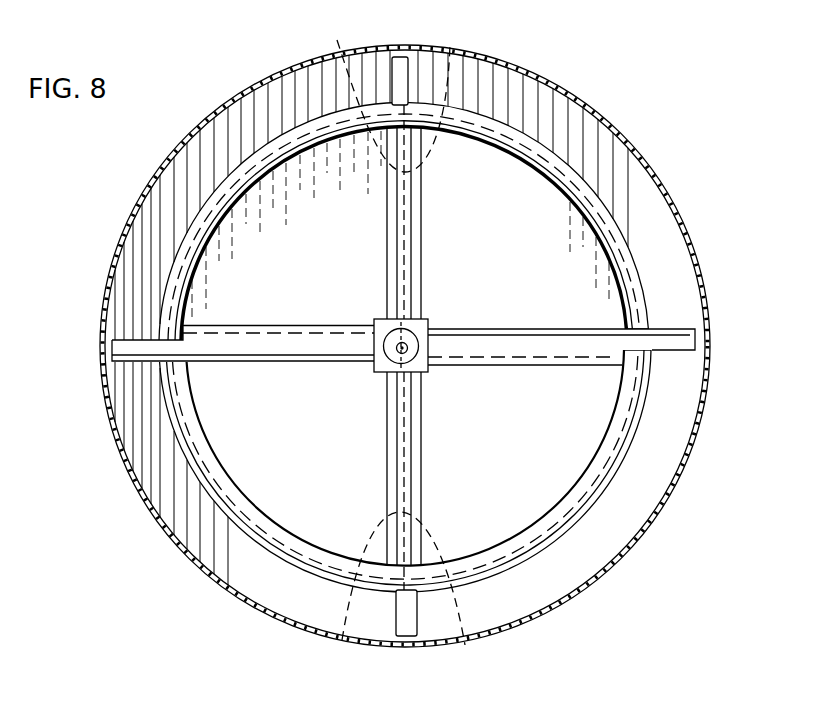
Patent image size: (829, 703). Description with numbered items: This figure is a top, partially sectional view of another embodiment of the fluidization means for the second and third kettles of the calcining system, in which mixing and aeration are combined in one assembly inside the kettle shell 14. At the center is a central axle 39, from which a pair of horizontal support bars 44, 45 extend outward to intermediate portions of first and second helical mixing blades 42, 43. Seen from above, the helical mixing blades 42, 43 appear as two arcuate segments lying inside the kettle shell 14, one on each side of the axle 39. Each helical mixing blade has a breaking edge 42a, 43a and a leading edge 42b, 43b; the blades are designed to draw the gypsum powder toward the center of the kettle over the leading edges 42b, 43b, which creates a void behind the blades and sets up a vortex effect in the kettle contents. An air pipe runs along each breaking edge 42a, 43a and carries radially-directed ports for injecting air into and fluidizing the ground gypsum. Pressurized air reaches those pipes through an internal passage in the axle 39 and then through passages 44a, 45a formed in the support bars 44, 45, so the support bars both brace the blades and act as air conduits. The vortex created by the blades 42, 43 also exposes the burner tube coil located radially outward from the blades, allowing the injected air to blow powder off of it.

The kettle shell 14 is at (690, 453).
The central axle 39 is at (385, 331).
The first helical mixing blade 42 is at (422, 481).
The breaking edge 42a is at (575, 532).
The leading edge 42b is at (580, 494).
The second helical mixing blade 43 is at (396, 202).
The breaking edge 43a is at (587, 178).
The leading edge 43b is at (525, 150).
The horizontal support bar 44 is at (363, 103).
The passage 44a is at (448, 44).
The horizontal support bar 45 is at (343, 635).
The passage 45a is at (460, 638).